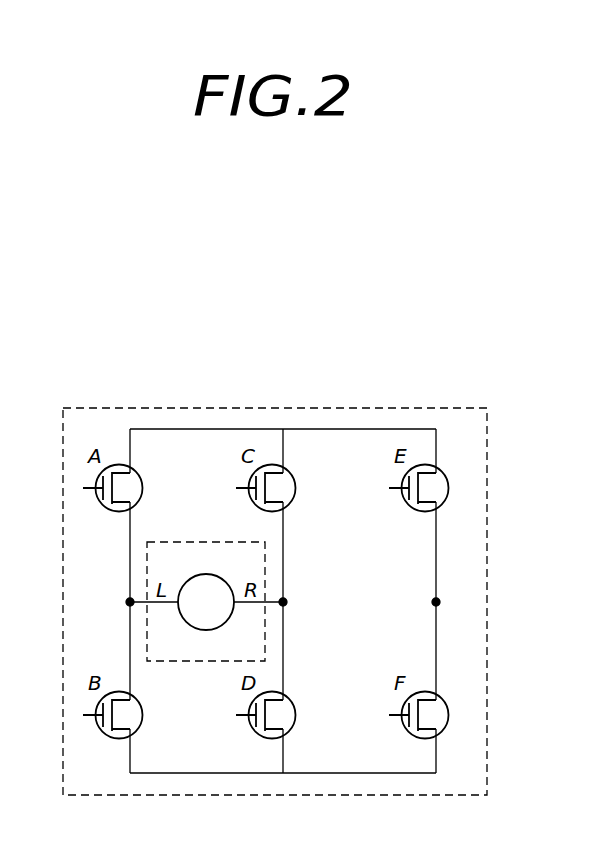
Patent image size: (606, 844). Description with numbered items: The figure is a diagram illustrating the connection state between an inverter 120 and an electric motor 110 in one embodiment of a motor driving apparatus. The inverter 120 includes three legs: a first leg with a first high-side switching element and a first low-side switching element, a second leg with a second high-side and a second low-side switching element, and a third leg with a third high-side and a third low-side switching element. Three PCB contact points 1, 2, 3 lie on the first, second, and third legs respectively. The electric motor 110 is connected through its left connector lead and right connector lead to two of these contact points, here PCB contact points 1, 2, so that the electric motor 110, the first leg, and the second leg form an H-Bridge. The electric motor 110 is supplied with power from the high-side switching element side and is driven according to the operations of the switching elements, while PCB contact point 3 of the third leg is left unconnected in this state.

The electric motor 110 is at (147, 571).
The inverter 120 is at (272, 404).
The PCB contact point 1 is at (119, 602).
The PCB contact point 2 is at (292, 602).
The PCB contact point 3 is at (444, 602).